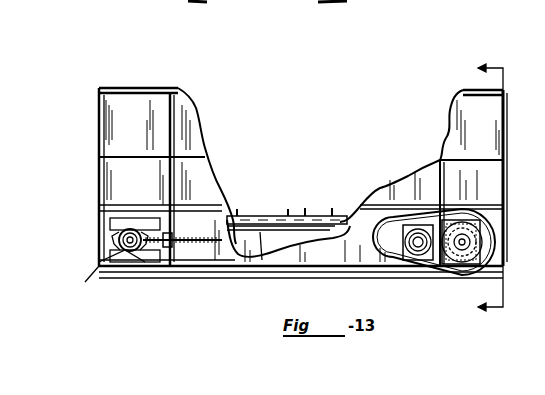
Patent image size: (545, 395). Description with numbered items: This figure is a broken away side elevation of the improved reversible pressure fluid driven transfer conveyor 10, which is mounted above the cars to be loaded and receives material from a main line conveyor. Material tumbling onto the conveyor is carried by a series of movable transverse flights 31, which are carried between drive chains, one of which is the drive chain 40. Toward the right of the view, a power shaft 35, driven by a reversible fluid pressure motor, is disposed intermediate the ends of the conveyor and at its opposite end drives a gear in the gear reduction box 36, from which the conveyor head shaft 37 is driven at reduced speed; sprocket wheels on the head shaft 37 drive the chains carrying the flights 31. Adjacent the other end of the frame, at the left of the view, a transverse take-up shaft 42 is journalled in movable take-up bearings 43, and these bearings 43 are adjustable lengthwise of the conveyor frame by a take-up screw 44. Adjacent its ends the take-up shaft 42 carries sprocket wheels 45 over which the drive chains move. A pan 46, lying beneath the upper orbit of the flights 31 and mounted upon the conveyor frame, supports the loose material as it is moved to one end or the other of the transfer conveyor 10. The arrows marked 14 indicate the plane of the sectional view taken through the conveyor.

The transfer conveyor 10 is at (322, 127).
The section line 14- 14 is at (479, 188).
The movable flights 31 is at (247, 213).
The power shaft 35 is at (417, 250).
The gear reduction box 36 is at (450, 220).
The conveyor head shaft 37 is at (463, 230).
The drive chain 40 is at (318, 212).
The take-up shaft 42 is at (129, 247).
The take-up bearings 43 is at (120, 252).
The take-up screw 44 is at (198, 247).
The sprocket wheels 45 is at (128, 232).
The pan 46 is at (262, 260).